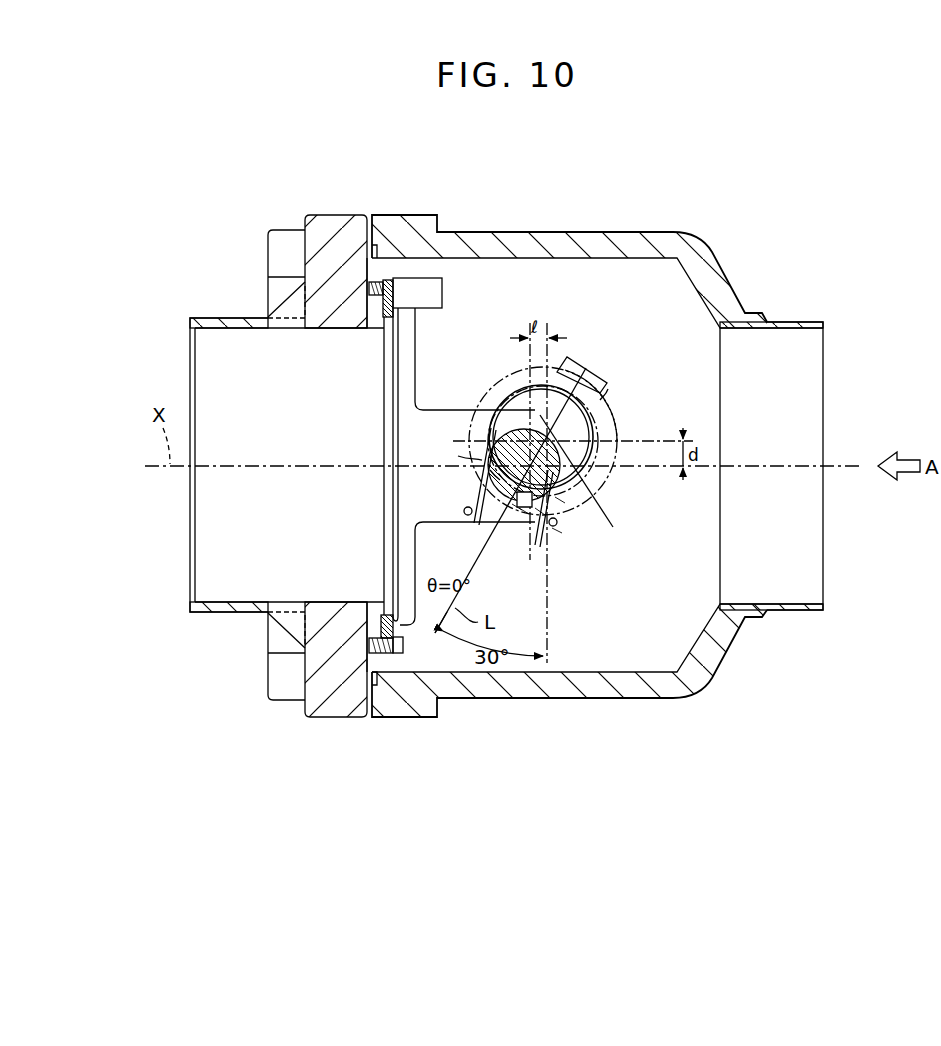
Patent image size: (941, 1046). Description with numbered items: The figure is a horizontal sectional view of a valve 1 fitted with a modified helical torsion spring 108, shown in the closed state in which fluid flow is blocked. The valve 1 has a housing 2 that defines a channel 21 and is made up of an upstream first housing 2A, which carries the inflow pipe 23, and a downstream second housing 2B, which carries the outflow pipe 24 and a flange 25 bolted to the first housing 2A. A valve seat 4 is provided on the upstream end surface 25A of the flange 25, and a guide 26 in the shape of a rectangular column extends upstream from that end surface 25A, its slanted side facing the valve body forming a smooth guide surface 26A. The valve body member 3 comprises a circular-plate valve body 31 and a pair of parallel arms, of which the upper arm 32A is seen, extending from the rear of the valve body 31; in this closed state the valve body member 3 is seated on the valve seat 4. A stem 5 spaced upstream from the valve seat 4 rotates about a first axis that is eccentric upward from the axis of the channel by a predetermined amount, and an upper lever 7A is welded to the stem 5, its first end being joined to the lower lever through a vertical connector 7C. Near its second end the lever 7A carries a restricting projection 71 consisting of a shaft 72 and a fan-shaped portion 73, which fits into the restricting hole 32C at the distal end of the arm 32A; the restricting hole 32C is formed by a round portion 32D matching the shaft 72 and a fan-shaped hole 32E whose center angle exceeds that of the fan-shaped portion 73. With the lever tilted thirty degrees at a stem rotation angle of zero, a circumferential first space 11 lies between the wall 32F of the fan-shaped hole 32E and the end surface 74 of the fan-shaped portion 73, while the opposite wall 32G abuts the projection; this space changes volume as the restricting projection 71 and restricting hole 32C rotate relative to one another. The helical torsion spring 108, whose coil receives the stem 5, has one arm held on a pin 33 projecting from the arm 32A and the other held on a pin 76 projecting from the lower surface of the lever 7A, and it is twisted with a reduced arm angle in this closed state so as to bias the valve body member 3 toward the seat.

The valve 1 is at (565, 151).
The housing 2 is at (422, 775).
The first housing 2A is at (404, 718).
The second housing 2B is at (352, 718).
The valve body member 3 is at (485, 331).
The valve seat 4 is at (408, 631).
The stem 5 is at (600, 453).
The lever 7A is at (613, 417).
The vertical connector 7C is at (608, 360).
The first space 11 is at (517, 507).
The channel 21 is at (667, 645).
The inflow pipe 23 is at (800, 322).
The outflow pipe 24 is at (222, 318).
The flange 25 is at (330, 213).
The upstream end surface 25A is at (370, 268).
The guide 26 is at (442, 292).
The guide surface 26A is at (416, 312).
The valve body 31 is at (415, 334).
The arm 32A is at (440, 420).
The restricting hole 32C is at (645, 506).
The round portion 32D is at (560, 500).
The fan-shaped hole 32E is at (557, 530).
The wall 32F is at (540, 512).
The wall 32G is at (580, 364).
The pin 33 is at (465, 509).
The restricting projection 71 is at (492, 427).
The shaft 72 is at (582, 470).
The fan-shaped portion 73 is at (490, 476).
The end surface 74 is at (497, 522).
The pin 76 is at (573, 543).
The helical torsion spring 108 is at (523, 512).